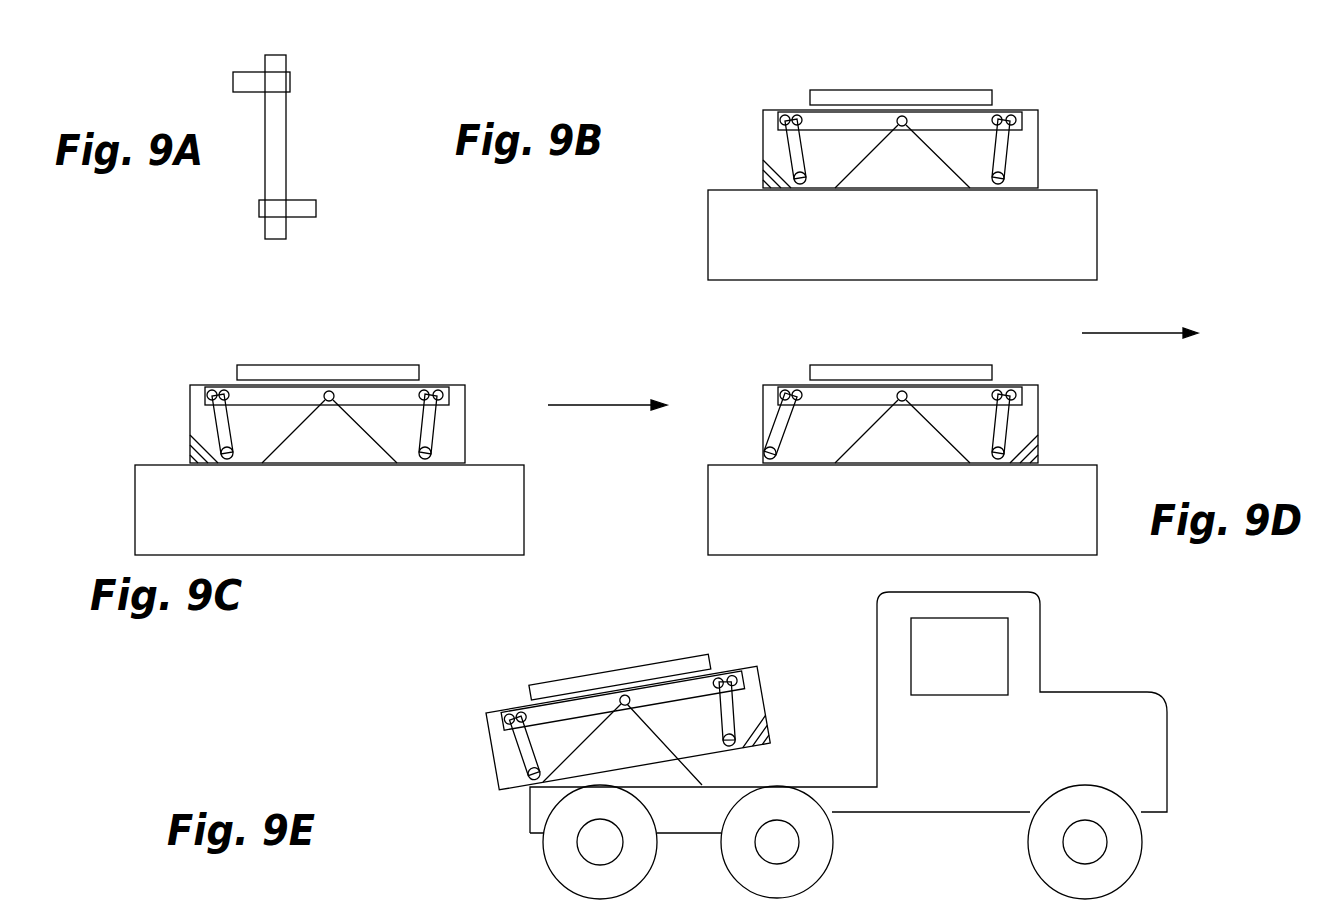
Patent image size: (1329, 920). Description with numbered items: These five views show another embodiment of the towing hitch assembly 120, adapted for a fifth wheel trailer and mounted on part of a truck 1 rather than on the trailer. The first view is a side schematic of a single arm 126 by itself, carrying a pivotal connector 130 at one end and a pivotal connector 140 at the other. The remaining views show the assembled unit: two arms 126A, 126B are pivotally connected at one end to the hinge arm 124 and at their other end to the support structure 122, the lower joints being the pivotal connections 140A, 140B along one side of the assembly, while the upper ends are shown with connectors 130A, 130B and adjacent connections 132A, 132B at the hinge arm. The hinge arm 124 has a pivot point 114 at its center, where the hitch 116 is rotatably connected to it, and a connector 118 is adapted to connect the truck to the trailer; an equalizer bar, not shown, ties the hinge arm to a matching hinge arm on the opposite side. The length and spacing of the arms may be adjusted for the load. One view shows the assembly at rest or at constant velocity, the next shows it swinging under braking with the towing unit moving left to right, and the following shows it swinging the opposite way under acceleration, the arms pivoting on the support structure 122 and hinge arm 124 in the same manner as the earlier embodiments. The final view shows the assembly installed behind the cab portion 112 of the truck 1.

In FIG. 9E, the vehicle 1 is at (848, 748).
In FIG. 9E, the cab 112 is at (1020, 645).
In FIG. 9B, the pivot 114 is at (907, 118).
In FIG. 9C, the pivot 114 is at (333, 392).
In FIG. 9D, the pivot 114 is at (907, 392).
In FIG. 9E, the pivot 114 is at (622, 739).
In FIG. 9B, the hitch 116 is at (913, 165).
In FIG. 9C, the hitch 116 is at (330, 442).
In FIG. 9D, the hitch 116 is at (877, 452).
In FIG. 9B, the connector 118 is at (866, 100).
In FIG. 9C, the connector 118 is at (303, 372).
In FIG. 9D, the connector 118 is at (860, 372).
In FIG. 9E, the connector 118 is at (602, 677).
In FIG. 9B, the towing hitch assembly 120 is at (887, 132).
In FIG. 9C, the towing hitch assembly 120 is at (331, 403).
In FIG. 9D, the towing hitch assembly 120 is at (916, 408).
In FIG. 9E, the towing hitch assembly 120 is at (613, 718).
In FIG. 9B, the support structure 122 is at (762, 168).
In FIG. 9C, the support structure 122 is at (188, 446).
In FIG. 9D, the support structure 122 is at (760, 458).
In FIG. 9E, the support structure 122 is at (495, 770).
In FIG. 9B, the hinge arm 124 is at (980, 120).
In FIG. 9C, the hinge arm 124 is at (383, 400).
In FIG. 9D, the hinge arm 124 is at (982, 395).
In FIG. 9E, the hinge arm 124 is at (693, 687).
In FIG. 9A, the arm 126 is at (276, 148).
In FIG. 9B, the arm 126A is at (790, 145).
In FIG. 9C, the arm 126A is at (220, 422).
In FIG. 9D, the arm 126A is at (778, 427).
In FIG. 9E, the arm 126A is at (517, 740).
In FIG. 9B, the arm 126B is at (1005, 150).
In FIG. 9C, the arm 126B is at (447, 427).
In FIG. 9D, the arm 126B is at (1005, 428).
In FIG. 9E, the arm 126B is at (725, 718).
In FIG. 9A, the pivotal connector 130 is at (286, 80).
In FIG. 9B, the first upper roller 130A is at (784, 115).
In FIG. 9C, the first upper roller 130A is at (212, 392).
In FIG. 9D, the first upper roller 130A is at (785, 391).
In FIG. 9E, the first upper roller 130A is at (511, 714).
In FIG. 9B, the second upper roller 130B is at (1020, 108).
In FIG. 9C, the second upper roller 130B is at (457, 396).
In FIG. 9D, the second upper roller 130B is at (1020, 393).
In FIG. 9E, the second upper roller 130B is at (735, 679).
In FIG. 9B, the first guide roller 132A is at (798, 115).
In FIG. 9C, the first guide roller 132A is at (227, 392).
In FIG. 9D, the first guide roller 132A is at (798, 391).
In FIG. 9E, the first guide roller 132A is at (522, 712).
In FIG. 9B, the second guide roller 132B is at (1010, 114).
In FIG. 9C, the second guide roller 132B is at (438, 395).
In FIG. 9D, the second guide roller 132B is at (998, 391).
In FIG. 9E, the second guide roller 132B is at (719, 680).
In FIG. 9A, the pivotal connector 140 is at (306, 211).
In FIG. 9B, the pivotal connection 140A is at (808, 182).
In FIG. 9C, the pivotal connection 140A is at (233, 456).
In FIG. 9D, the pivotal connection 140A is at (783, 455).
In FIG. 9E, the pivotal connection 140A is at (532, 782).
In FIG. 9B, the pivotal connection 140B is at (1000, 172).
In FIG. 9C, the pivotal connection 140B is at (467, 454).
In FIG. 9D, the pivotal connection 140B is at (1003, 447).
In FIG. 9E, the pivotal connection 140B is at (729, 746).